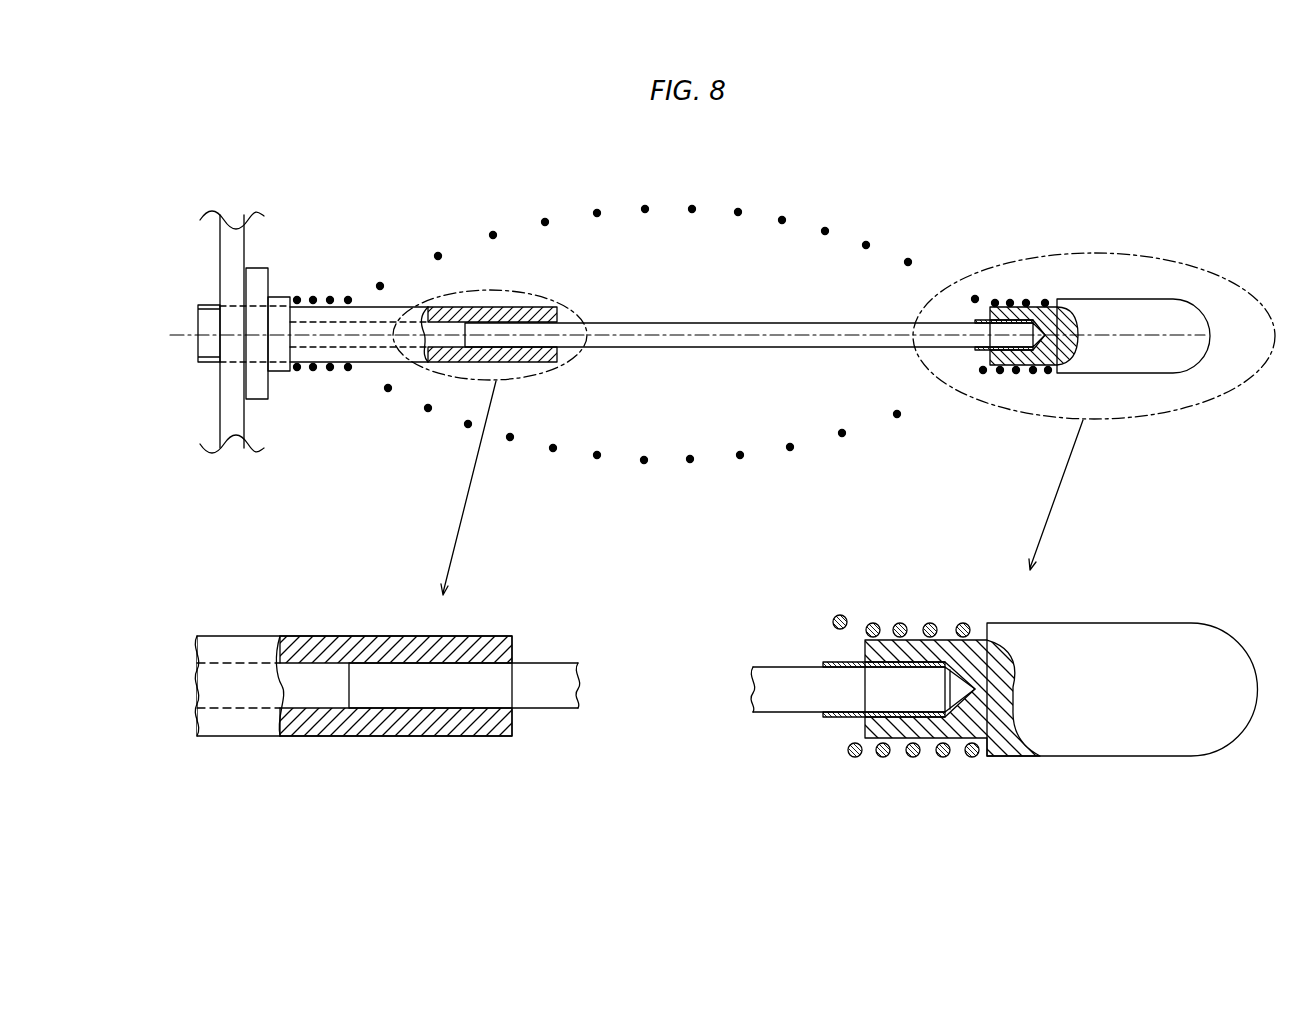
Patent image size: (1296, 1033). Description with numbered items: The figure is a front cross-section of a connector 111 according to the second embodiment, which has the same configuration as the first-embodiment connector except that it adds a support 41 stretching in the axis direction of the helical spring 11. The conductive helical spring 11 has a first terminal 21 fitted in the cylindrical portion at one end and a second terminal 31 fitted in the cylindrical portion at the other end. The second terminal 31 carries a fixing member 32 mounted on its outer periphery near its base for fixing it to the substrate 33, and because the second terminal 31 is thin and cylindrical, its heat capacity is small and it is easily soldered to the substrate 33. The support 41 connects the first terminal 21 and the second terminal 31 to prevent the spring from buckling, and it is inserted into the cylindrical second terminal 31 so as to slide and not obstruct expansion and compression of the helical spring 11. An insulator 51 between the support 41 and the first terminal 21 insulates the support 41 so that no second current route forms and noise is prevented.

The helical spring 11 is at (645, 206).
The first terminal 21 is at (1128, 357).
The second terminal 31 is at (198, 350).
The fixing member 32 is at (265, 272).
The substrate 33 is at (221, 264).
The support 41 is at (818, 330).
The insulator 51 is at (841, 662).
The connector 111 is at (789, 177).